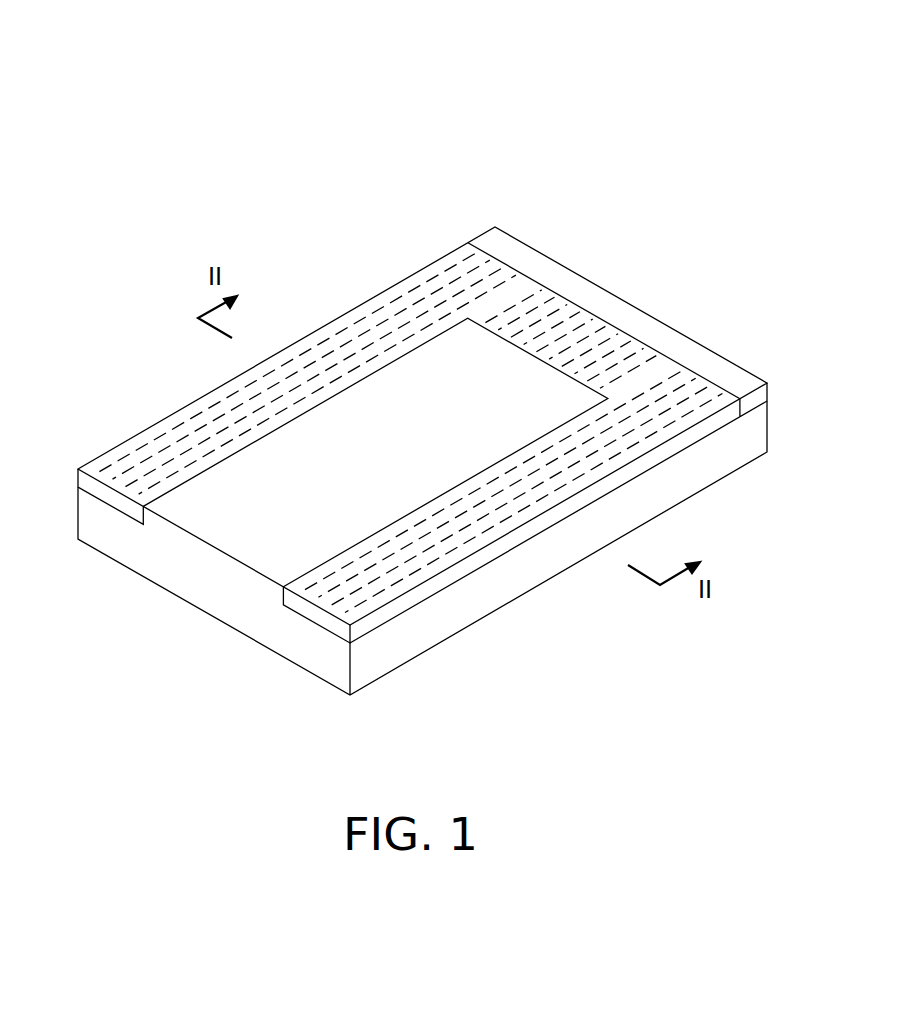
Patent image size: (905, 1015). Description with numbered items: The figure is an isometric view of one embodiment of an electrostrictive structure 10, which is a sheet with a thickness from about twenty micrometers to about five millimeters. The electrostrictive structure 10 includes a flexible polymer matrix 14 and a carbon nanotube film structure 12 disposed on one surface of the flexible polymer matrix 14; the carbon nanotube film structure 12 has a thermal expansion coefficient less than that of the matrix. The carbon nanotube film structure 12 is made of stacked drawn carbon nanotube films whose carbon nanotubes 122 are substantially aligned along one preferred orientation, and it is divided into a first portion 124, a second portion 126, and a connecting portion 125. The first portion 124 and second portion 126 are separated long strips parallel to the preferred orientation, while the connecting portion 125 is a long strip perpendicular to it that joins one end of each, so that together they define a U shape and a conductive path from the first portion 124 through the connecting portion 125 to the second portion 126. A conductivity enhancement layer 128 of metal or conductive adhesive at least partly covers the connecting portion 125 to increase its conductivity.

The electrostrictive structure 10 is at (448, 355).
The carbon nanotube film structure 12 is at (710, 420).
The flexible polymer matrix 14 is at (687, 475).
The carbon nanotubes 122 is at (458, 260).
The first portion 124 is at (227, 408).
The connecting portion 125 is at (596, 350).
The second portion 126 is at (453, 542).
The conductivity enhancement layer 128 is at (550, 277).